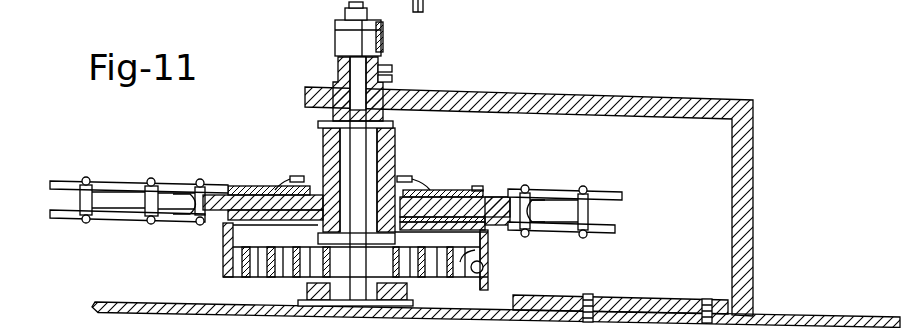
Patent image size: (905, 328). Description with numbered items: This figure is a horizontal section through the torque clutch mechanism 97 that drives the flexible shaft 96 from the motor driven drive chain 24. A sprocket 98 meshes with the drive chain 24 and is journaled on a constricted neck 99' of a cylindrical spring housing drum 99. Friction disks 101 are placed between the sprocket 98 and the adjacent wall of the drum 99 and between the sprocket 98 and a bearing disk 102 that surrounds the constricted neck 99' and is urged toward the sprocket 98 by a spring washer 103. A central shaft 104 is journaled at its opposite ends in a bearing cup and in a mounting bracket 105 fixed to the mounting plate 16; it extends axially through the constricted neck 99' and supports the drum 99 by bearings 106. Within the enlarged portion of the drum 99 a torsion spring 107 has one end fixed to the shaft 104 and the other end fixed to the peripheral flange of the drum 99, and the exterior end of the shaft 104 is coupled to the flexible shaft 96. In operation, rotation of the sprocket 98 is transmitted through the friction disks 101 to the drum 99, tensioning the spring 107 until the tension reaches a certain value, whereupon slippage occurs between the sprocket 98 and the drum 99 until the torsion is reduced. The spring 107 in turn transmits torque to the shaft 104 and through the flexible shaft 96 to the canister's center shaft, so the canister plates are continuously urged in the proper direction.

The mounting plate 16 is at (762, 315).
The drive chain 24 is at (600, 192).
The flexible shaft 96 is at (343, 33).
The torque clutch mechanism 97 is at (237, 166).
The sprocket 98 is at (225, 195).
The spring housing drum 99 is at (331, 256).
The constricted neck 99' is at (379, 178).
The friction disks 101 is at (480, 190).
The bearing disk 102 is at (445, 192).
The spring washer 103 is at (405, 178).
The central shaft 104 is at (380, 85).
The mounting bracket 105 is at (653, 95).
The bearings 106 is at (320, 130).
The torsion spring 107 is at (487, 245).